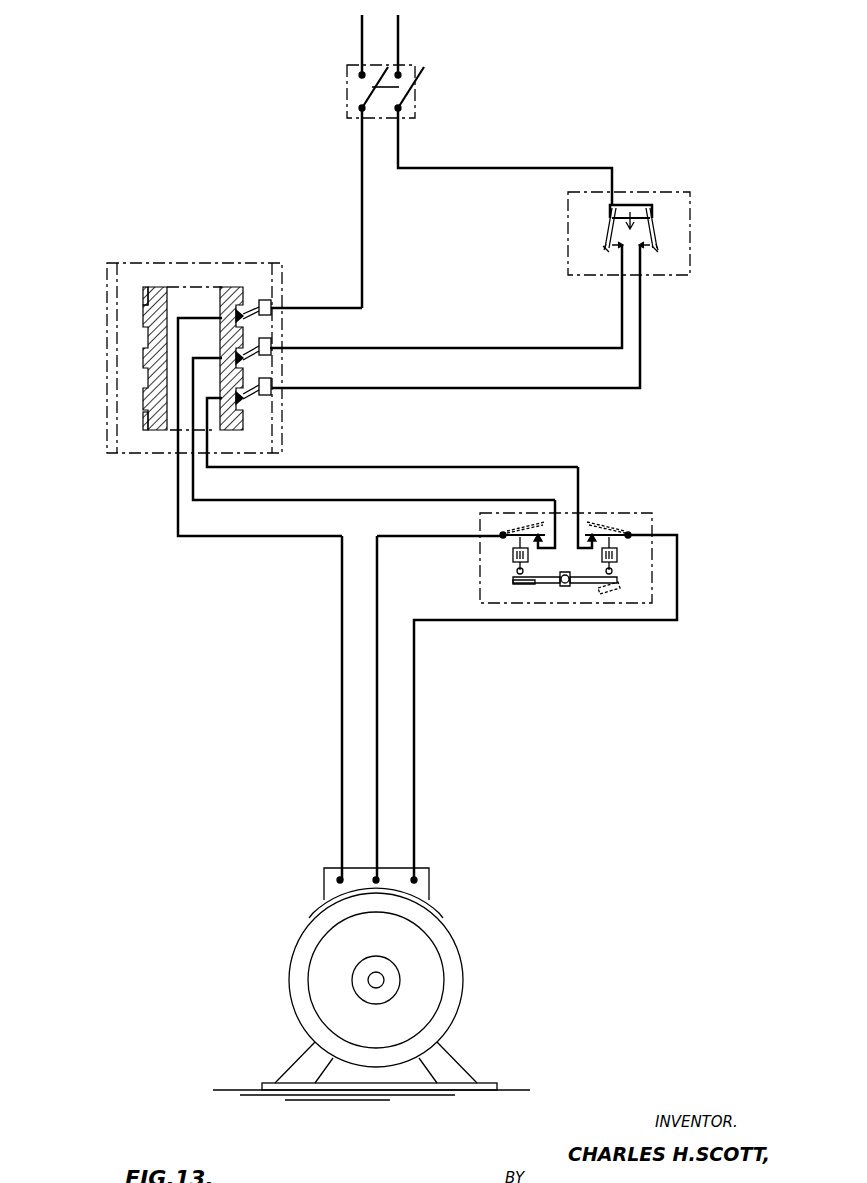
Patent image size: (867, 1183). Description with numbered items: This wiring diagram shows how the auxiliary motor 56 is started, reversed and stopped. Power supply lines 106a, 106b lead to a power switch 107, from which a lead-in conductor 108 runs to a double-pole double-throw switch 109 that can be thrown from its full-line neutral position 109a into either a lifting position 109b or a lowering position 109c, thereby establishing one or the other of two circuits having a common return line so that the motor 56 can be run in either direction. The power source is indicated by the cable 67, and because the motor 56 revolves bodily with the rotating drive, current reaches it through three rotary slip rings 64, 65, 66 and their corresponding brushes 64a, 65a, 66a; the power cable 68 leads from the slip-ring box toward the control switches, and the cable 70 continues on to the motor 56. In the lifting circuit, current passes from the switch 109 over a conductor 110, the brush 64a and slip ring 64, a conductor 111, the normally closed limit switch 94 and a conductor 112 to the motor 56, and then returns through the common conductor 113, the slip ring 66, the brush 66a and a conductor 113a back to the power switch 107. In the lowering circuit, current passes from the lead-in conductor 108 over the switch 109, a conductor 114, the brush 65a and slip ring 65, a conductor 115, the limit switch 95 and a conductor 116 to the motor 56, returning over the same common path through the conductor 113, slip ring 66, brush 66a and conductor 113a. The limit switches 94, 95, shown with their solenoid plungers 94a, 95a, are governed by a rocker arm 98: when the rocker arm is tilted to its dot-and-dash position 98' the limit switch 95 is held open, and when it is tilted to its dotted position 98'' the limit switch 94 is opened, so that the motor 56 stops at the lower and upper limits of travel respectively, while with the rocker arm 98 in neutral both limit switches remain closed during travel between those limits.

The power supply line 106a is at (362, 32).
The power supply line 106b is at (398, 42).
The power switch 107 is at (415, 98).
The lead-in conductor 108 is at (502, 168).
The cable 67 is at (428, 170).
The conductor 113a is at (362, 234).
The double-pole double-throw switch 109 is at (632, 205).
The neutral position 109a is at (652, 254).
The lifting position 109b is at (603, 226).
The lowering position 109c is at (660, 230).
The slip ring 66 is at (148, 313).
The slip ring 65 is at (148, 357).
The slip ring 64 is at (148, 399).
The brush 66a is at (268, 303).
The brush 65a is at (272, 345).
The brush 64a is at (272, 396).
The conductor 114 is at (418, 348).
The conductor 110 is at (640, 382).
The conductor 111 is at (448, 467).
The conductor 115 is at (425, 500).
The power cable 68 is at (238, 468).
The limit switch 95 is at (513, 555).
The solenoid plunger 95a is at (518, 576).
The limit switch 94 is at (617, 553).
The solenoid plunger 94a is at (620, 578).
The rocker arm 98 is at (569, 616).
The rocker arm position 98' is at (639, 624).
The rocker arm position 98'' is at (510, 619).
The conductor 112 is at (414, 690).
The conductor 116 is at (377, 748).
The common conductor 113 is at (342, 755).
The cable 70 is at (414, 800).
The auxiliary motor 56 is at (445, 965).